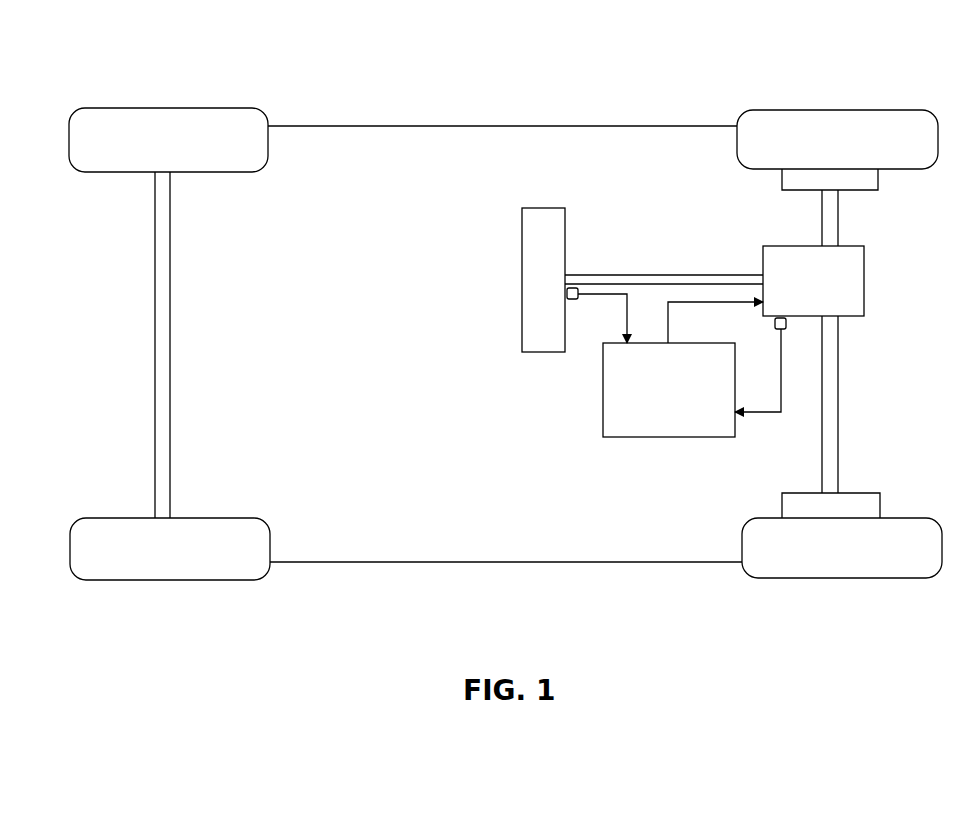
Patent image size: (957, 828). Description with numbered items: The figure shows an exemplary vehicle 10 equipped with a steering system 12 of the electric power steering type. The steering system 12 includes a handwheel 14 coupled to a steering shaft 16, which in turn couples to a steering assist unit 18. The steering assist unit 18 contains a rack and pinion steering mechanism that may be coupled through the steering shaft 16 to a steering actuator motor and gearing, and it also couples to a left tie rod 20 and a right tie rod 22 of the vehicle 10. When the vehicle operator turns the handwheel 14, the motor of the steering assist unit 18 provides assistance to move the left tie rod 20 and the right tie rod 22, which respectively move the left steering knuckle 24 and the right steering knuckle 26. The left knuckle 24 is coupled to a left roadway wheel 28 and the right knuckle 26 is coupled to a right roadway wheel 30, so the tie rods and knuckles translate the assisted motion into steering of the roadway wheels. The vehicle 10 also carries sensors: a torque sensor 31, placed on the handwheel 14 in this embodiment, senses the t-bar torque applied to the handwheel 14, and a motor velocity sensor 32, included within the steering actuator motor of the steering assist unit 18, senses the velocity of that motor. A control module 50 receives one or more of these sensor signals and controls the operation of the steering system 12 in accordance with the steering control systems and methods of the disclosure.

The vehicle 10 is at (538, 46).
The steering system 12 is at (634, 188).
The handwheel 14 is at (540, 208).
The steering shaft 16 is at (640, 275).
The steering assist unit 18 is at (866, 283).
The left tie rod 20 is at (838, 233).
The right tie rod 22 is at (840, 389).
The left steering knuckle 24 is at (782, 178).
The right steering knuckle 26 is at (808, 493).
The left roadway wheel 28 is at (870, 110).
The right roadway wheel 30 is at (889, 517).
The torque sensor 31 is at (570, 300).
The motor velocity sensor 32 is at (788, 324).
The control module 50 is at (687, 343).